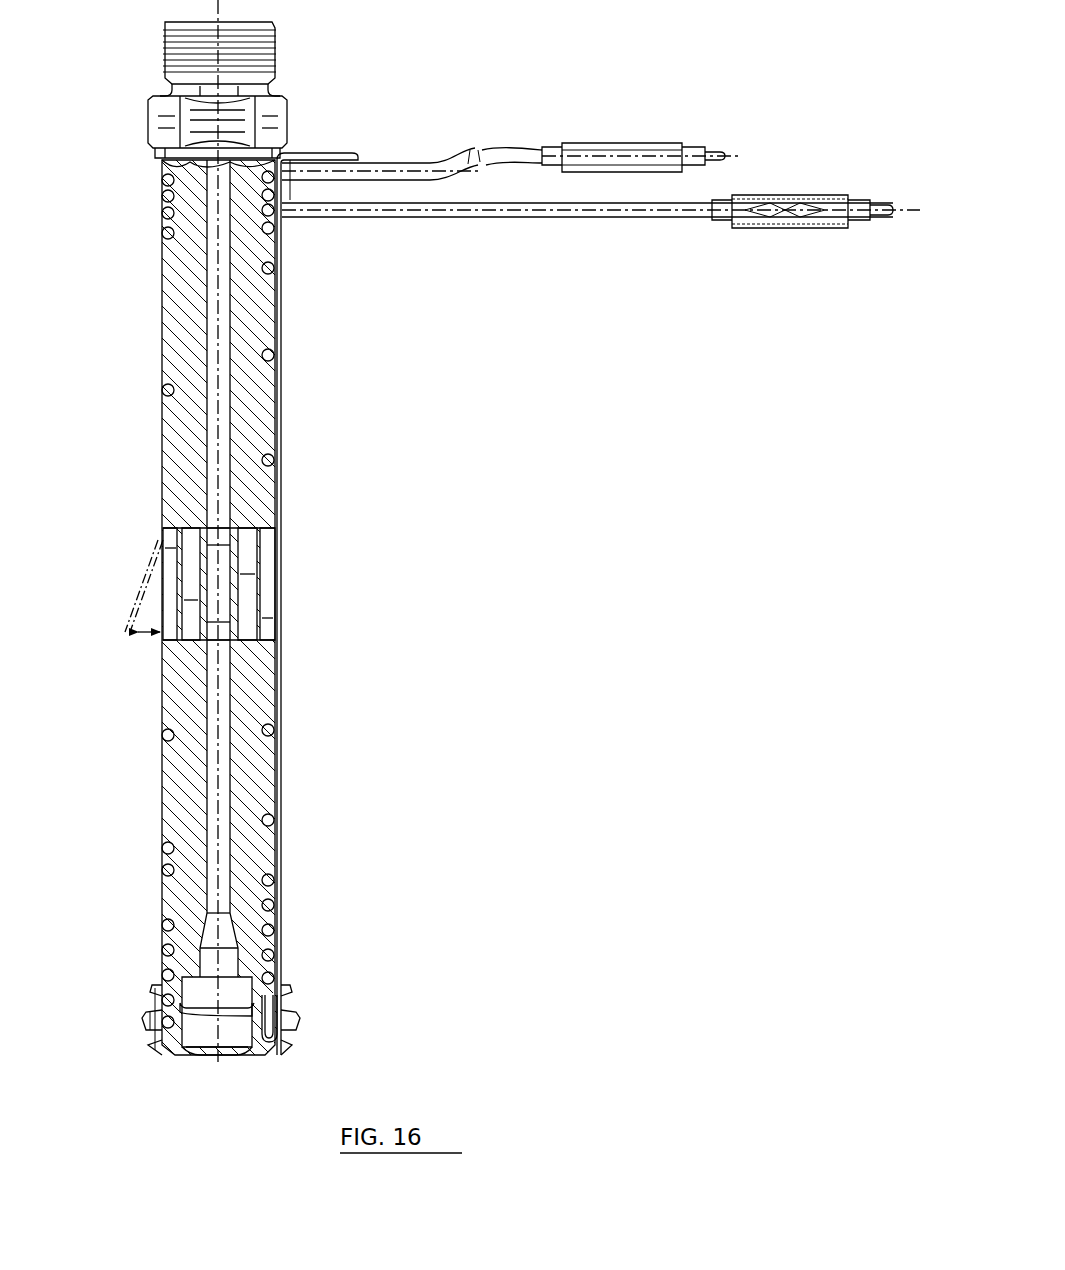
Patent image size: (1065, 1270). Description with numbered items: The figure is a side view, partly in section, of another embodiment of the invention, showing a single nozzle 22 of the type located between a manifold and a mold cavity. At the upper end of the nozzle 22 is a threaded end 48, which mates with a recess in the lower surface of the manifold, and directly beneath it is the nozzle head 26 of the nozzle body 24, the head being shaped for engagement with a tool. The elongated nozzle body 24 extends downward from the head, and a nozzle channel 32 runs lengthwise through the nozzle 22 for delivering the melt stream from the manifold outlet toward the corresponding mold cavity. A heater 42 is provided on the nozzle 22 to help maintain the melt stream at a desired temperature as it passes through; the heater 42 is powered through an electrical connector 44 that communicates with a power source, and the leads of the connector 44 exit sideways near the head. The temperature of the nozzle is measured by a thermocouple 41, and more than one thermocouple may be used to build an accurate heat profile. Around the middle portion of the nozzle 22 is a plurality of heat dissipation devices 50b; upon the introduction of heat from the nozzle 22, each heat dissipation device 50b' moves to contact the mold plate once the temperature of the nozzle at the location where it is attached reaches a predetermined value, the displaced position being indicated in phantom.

The nozzle 22 is at (325, 748).
The nozzle body 24 is at (262, 415).
The nozzle head 26 is at (150, 132).
The nozzle channel 32 is at (206, 357).
The thermocouple 41 is at (282, 800).
The heater 42 is at (163, 233).
The electrical connector 44 is at (292, 232).
The threaded end 48 is at (165, 46).
The heat dissipation device 50b is at (276, 584).
The heat dissipation device 50b' is at (89, 590).